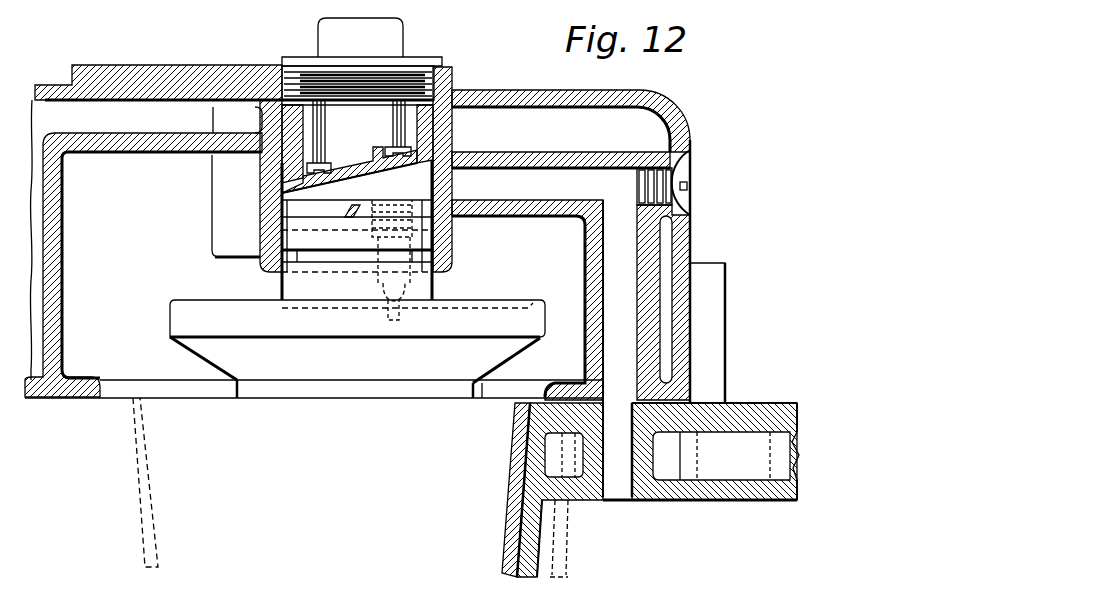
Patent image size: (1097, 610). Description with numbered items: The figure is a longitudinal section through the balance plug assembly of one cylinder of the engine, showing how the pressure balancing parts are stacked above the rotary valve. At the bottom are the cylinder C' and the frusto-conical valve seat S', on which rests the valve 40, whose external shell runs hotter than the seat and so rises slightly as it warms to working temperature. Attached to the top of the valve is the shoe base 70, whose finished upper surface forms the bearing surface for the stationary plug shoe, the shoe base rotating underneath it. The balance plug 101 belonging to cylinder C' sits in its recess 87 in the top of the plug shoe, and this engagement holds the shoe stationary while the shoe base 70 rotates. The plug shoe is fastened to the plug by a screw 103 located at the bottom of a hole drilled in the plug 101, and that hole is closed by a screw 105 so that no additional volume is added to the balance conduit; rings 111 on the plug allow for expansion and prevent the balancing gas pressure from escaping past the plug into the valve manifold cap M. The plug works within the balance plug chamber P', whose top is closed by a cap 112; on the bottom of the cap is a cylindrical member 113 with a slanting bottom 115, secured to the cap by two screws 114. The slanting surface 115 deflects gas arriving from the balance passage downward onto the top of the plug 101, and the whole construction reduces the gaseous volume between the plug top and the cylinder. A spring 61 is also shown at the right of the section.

The valve manifold cap M is at (690, 126).
The cylindrical member 113 is at (441, 129).
The spring 61 is at (629, 186).
The cap 112 is at (323, 63).
The rings 111 is at (282, 213).
The balance plug chamber P' is at (226, 206).
The slanting bottom 115 is at (358, 172).
The screws 114 is at (393, 121).
The screw 105 is at (450, 237).
The screw 103 is at (430, 283).
The recess 87 is at (432, 308).
The balance plug 101 is at (285, 288).
The shoe base 70 is at (212, 361).
The valve 40 is at (515, 514).
The valve seat S' is at (571, 538).
The cylinder C' is at (714, 472).